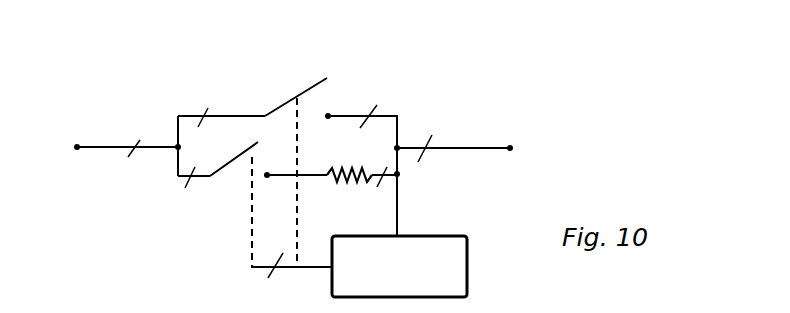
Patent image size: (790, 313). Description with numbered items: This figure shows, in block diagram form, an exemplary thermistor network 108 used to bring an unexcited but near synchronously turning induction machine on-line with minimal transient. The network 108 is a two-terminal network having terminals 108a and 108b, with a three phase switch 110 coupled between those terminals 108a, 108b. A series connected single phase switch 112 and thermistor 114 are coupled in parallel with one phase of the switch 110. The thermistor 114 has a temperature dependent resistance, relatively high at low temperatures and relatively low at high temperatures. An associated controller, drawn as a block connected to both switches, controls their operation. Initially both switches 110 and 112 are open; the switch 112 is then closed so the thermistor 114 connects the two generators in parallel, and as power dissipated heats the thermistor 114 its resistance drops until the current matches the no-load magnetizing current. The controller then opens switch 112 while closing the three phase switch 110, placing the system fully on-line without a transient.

The thermistor network 108 is at (135, 253).
The terminal 108a is at (516, 140).
The terminal 108b is at (77, 146).
The three phase switch 110 is at (296, 83).
The single phase switch 112 is at (239, 167).
The thermistor 114 is at (336, 188).